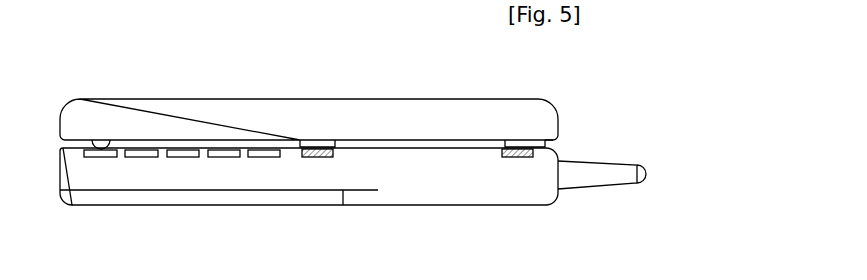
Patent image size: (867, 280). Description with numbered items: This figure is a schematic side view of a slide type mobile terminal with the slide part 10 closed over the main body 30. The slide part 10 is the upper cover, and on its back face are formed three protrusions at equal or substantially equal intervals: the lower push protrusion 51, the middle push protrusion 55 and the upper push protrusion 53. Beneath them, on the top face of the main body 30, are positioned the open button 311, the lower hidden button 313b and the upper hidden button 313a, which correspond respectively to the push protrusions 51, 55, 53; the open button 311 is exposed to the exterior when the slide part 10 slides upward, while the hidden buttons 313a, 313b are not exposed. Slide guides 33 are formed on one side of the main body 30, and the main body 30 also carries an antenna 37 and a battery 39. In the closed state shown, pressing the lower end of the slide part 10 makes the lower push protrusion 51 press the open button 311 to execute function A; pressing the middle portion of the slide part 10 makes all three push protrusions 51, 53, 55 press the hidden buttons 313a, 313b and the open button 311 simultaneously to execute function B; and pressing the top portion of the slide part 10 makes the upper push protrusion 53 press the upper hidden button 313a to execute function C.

The slide part 10 is at (410, 107).
The main body 30 is at (443, 192).
The slide guides 33 is at (557, 142).
The antenna 37 is at (585, 172).
The battery 39 is at (270, 205).
The lower push protrusion 51 is at (101, 140).
The upper push protrusion 53 is at (517, 145).
The middle push protrusion 55 is at (322, 146).
The open button 311 is at (99, 157).
The upper hidden button 313a is at (520, 158).
The lower hidden button 313b is at (317, 160).